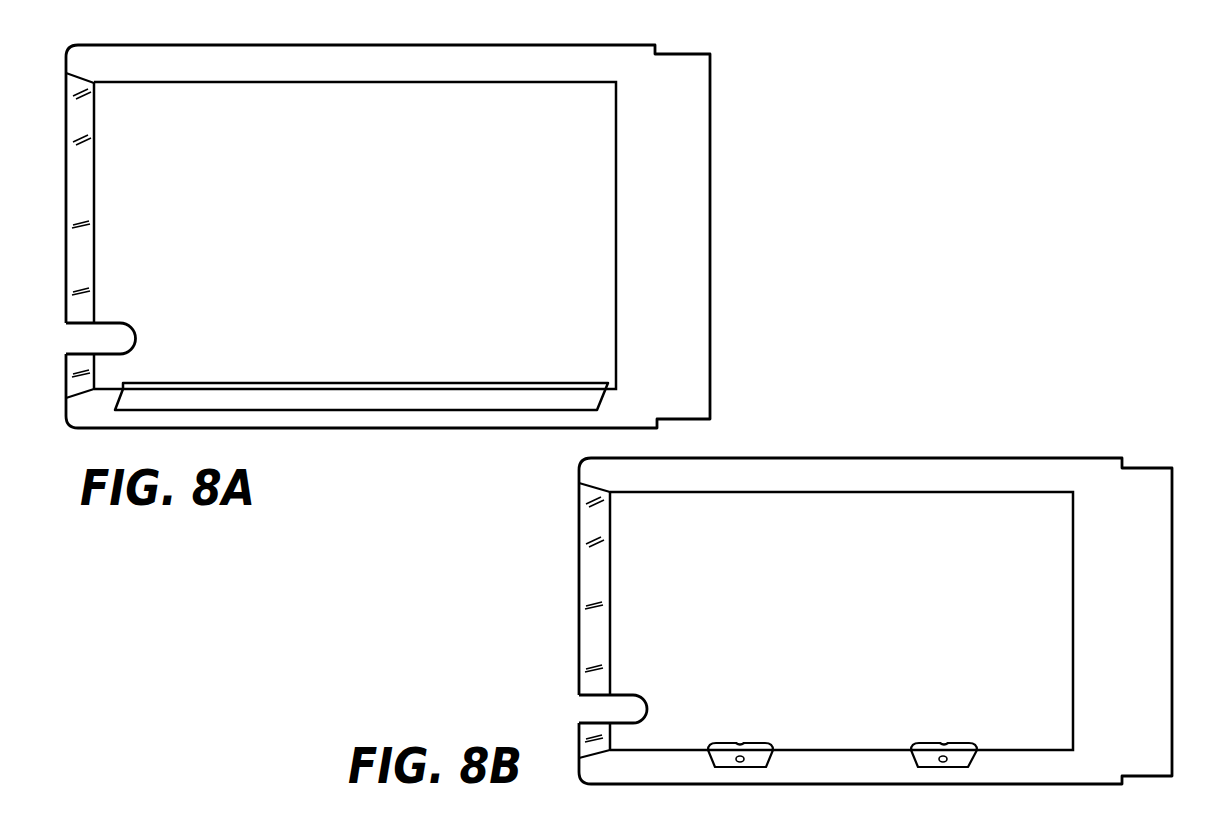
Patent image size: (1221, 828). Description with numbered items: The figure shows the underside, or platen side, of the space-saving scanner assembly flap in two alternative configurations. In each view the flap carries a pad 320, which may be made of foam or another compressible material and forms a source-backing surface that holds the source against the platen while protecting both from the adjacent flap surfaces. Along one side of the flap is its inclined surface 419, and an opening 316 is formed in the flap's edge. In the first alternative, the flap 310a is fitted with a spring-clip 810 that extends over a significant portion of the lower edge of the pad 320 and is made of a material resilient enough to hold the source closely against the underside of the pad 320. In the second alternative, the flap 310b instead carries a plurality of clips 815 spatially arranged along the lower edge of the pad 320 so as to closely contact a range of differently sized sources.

In FIG. 8A, the flap 310a is at (700, 176).
In FIG. 8B, the flap 310b is at (1110, 482).
In FIG. 8A, the opening 316 is at (97, 340).
In FIG. 8B, the opening 316 is at (618, 712).
In FIG. 8A, the pad 320 is at (445, 246).
In FIG. 8B, the pad 320 is at (883, 610).
In FIG. 8A, the inclined surface 419 is at (76, 178).
In FIG. 8B, the inclined surface 419 is at (595, 623).
In FIG. 8A, the spring-clip 810 is at (347, 397).
In FIG. 8B, the clips 815 is at (923, 758).